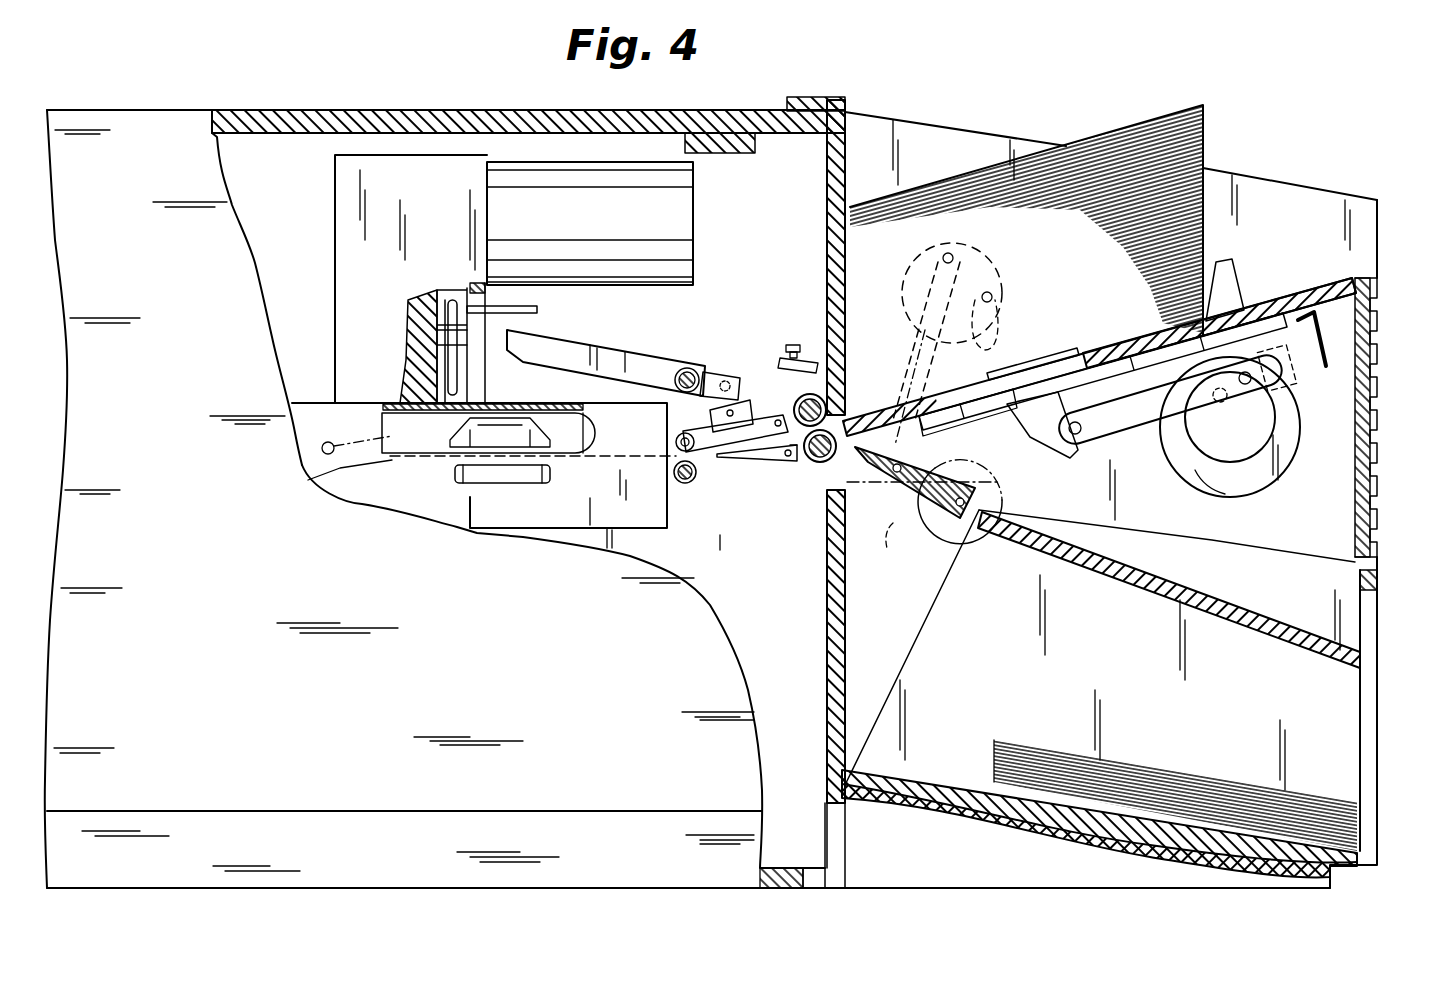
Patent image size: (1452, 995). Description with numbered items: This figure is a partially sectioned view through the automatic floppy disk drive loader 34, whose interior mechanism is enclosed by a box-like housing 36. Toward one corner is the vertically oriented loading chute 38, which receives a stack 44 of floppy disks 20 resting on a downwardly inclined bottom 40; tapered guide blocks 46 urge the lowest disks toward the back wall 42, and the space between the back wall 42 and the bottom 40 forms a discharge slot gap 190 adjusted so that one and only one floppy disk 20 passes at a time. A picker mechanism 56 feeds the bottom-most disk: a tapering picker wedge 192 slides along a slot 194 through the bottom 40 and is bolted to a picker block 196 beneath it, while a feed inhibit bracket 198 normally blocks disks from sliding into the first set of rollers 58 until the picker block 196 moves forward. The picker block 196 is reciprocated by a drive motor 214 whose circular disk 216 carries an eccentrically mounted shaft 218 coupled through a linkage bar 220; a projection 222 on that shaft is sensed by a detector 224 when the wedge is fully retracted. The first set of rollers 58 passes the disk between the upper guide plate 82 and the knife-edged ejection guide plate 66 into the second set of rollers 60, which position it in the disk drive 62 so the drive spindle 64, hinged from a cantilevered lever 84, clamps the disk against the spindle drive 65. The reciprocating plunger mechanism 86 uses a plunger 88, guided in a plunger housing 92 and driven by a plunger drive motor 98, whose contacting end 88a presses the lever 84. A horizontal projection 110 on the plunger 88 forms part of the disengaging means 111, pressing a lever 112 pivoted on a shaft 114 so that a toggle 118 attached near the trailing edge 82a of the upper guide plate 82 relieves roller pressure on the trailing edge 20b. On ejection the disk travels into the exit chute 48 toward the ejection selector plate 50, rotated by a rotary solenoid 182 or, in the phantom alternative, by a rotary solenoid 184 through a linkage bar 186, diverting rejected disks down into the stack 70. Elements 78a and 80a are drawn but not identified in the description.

The floppy disk 20 is at (392, 470).
The trailing edge of the floppy disk 20b is at (748, 462).
The automatic floppy disk drive loader 34 is at (372, 99).
The housing 36 is at (157, 138).
The loading chute 38 is at (974, 156).
The bottom of the loading chute 40 is at (1298, 303).
The back wall of the loading chute 42 is at (856, 135).
The stack of floppy disks 44 is at (1170, 133).
The tapered guide blocks 46 is at (1234, 282).
The exit chute 48 is at (1352, 620).
The ejection selector plate 50 is at (914, 532).
The picker mechanism 56 is at (1130, 374).
The first set of rollers 58 is at (808, 392).
The second set of rollers 60 is at (674, 381).
The disk drive 62 is at (313, 410).
The drive spindle 64 is at (592, 412).
The spindle drive 65 is at (497, 490).
The ejection guide plate 66 is at (796, 457).
The stack of rejected floppy disks 70 is at (1292, 795).
The mounting plate 78a is at (676, 490).
The lever arm 80a is at (680, 432).
The upper guide plate 82 is at (770, 418).
The trailing edge of the upper guide plate 82a is at (673, 445).
The cantilevered lever 84 is at (394, 408).
The reciprocating plunger mechanism 86 is at (400, 320).
The plunger 88 is at (442, 306).
The contacting end of the plunger 88a is at (460, 382).
The plunger housing 92 is at (412, 372).
The plunger drive motor 98 is at (685, 210).
The projection 110 is at (540, 310).
The disengaging means 111 is at (720, 386).
The lever 112 is at (600, 355).
The shaft 114 is at (697, 373).
The toggle 118 is at (770, 370).
The rotary solenoid 182 is at (1003, 503).
The rotary solenoid 184 is at (1000, 272).
The linkage bar 186 is at (897, 388).
The discharge slot gap 190 is at (882, 420).
The picker wedge 192 is at (1000, 367).
The slot 194 is at (962, 345).
The picker block 196 is at (1050, 462).
The feed inhibit bracket 198 is at (977, 424).
The drive motor 214 is at (1216, 496).
The circular disk 216 is at (1262, 460).
The eccentrically mounted shaft 218 is at (1220, 405).
The linkage bar 220 is at (1142, 446).
The projection 222 is at (1290, 380).
The detector 224 is at (1370, 380).